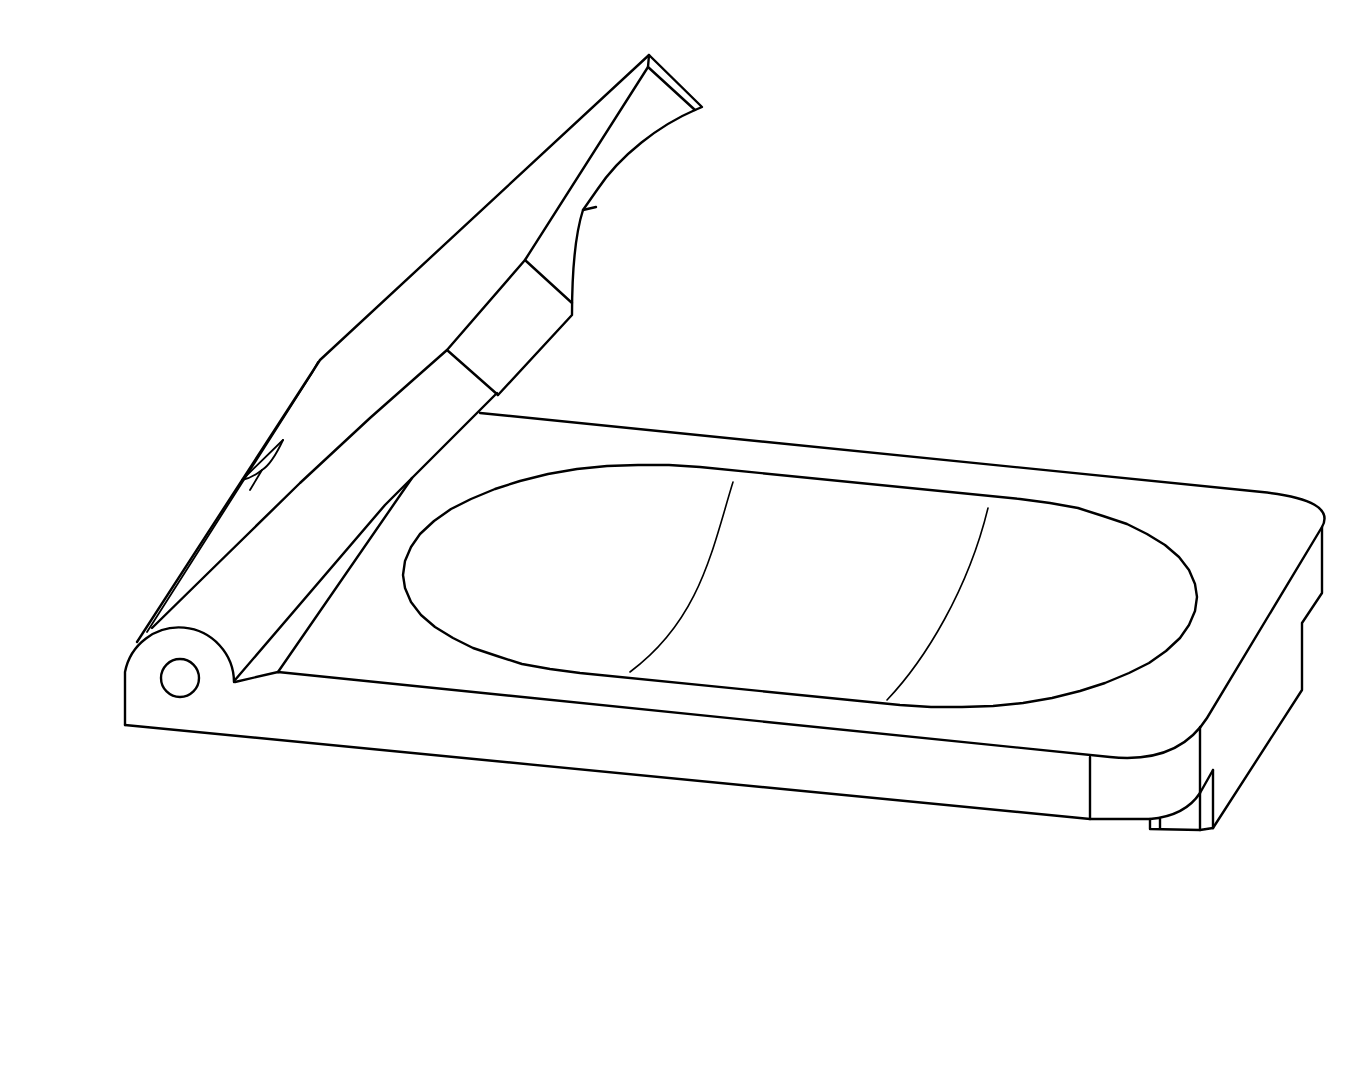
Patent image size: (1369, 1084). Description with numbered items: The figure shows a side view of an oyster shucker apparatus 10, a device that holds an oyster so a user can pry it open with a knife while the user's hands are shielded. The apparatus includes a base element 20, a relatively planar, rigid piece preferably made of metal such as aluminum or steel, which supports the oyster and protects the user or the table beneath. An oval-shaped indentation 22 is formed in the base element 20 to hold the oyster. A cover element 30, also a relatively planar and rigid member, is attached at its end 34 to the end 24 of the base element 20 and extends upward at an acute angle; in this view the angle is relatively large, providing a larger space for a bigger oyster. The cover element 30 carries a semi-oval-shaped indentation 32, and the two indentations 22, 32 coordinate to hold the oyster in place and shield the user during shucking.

The oyster shucker apparatus 10 is at (238, 181).
The base element 20 is at (1180, 690).
The oval-shaped indentation 22 is at (997, 602).
The end of the base element 24 is at (170, 717).
The cover element 30 is at (353, 402).
The semi-oval-shaped indentation 32 is at (638, 146).
The end of the cover element 34 is at (208, 603).